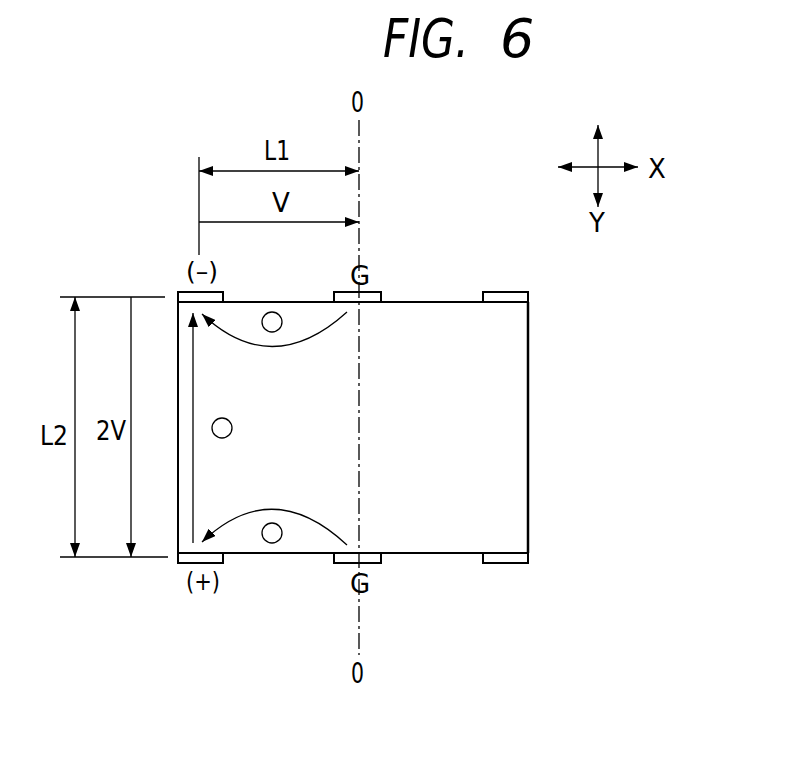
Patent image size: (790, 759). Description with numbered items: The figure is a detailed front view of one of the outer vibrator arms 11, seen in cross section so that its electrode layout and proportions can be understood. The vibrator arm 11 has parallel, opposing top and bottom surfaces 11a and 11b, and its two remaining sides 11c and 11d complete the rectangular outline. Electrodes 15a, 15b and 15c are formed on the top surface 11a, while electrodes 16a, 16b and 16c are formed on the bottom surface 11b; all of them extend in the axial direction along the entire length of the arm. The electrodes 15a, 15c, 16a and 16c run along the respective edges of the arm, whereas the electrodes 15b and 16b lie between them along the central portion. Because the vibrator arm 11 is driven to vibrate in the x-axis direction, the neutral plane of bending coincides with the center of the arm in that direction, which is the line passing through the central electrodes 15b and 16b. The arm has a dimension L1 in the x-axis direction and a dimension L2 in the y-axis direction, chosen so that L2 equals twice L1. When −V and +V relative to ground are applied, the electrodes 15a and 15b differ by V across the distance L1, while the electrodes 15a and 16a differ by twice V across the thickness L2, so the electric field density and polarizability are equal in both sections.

The outer vibrator arm 11 is at (508, 466).
The top surface 11a is at (450, 302).
The bottom surface 11b is at (443, 553).
The left side of body 11c is at (176, 528).
The right side of body 11d is at (528, 380).
The electrode 15a is at (178, 292).
The electrode 15b is at (380, 292).
The electrode 15c is at (508, 292).
The electrode 16a is at (222, 562).
The electrode 16b is at (381, 562).
The electrode 16c is at (515, 562).